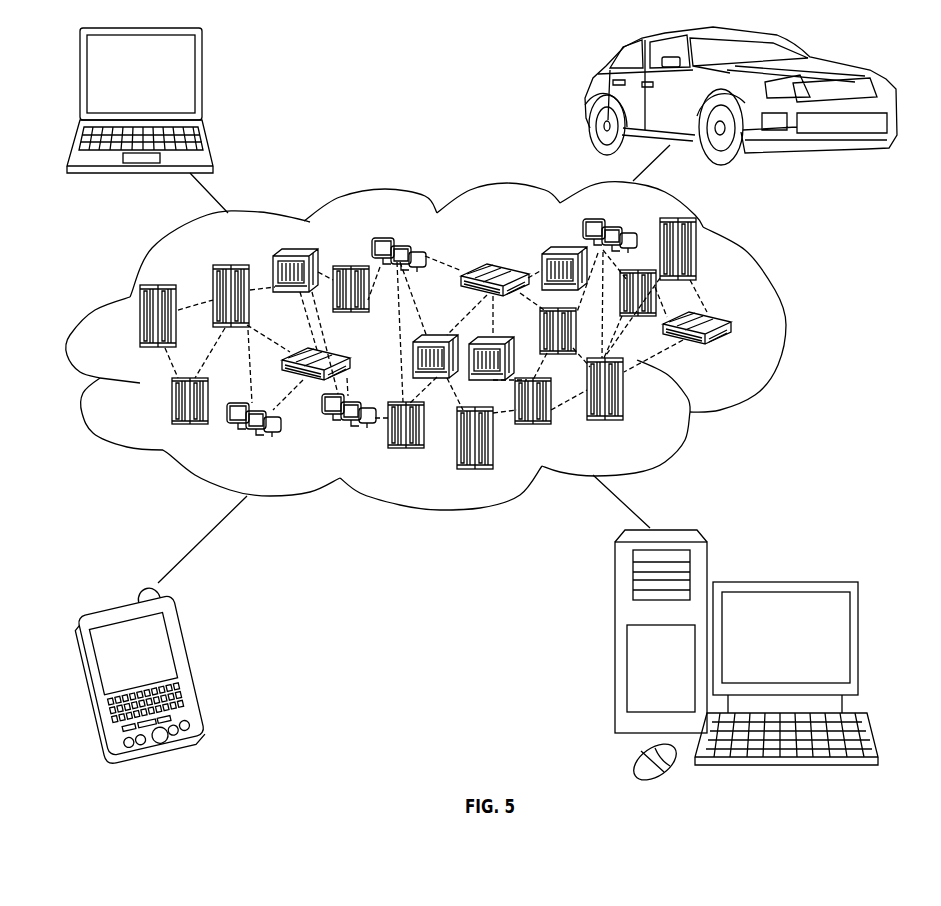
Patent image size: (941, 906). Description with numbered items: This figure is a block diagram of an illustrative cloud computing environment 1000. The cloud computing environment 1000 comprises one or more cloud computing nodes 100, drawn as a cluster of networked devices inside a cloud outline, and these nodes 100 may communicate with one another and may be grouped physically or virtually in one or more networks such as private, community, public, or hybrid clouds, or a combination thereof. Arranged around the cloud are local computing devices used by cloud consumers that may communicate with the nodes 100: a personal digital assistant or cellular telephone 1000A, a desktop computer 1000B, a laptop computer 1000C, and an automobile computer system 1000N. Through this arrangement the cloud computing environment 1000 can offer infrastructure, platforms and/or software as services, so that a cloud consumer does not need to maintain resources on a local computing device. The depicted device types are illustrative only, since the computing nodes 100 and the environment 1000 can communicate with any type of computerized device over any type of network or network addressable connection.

The cloud computing environment 1000 is at (785, 327).
The cloud computing nodes 100 is at (733, 350).
The personal digital assistant (PDA) or cellular telephone 1000A is at (193, 663).
The desktop computer 1000B is at (782, 582).
The laptop computer 1000C is at (203, 82).
The automobile computer system 1000N is at (592, 99).